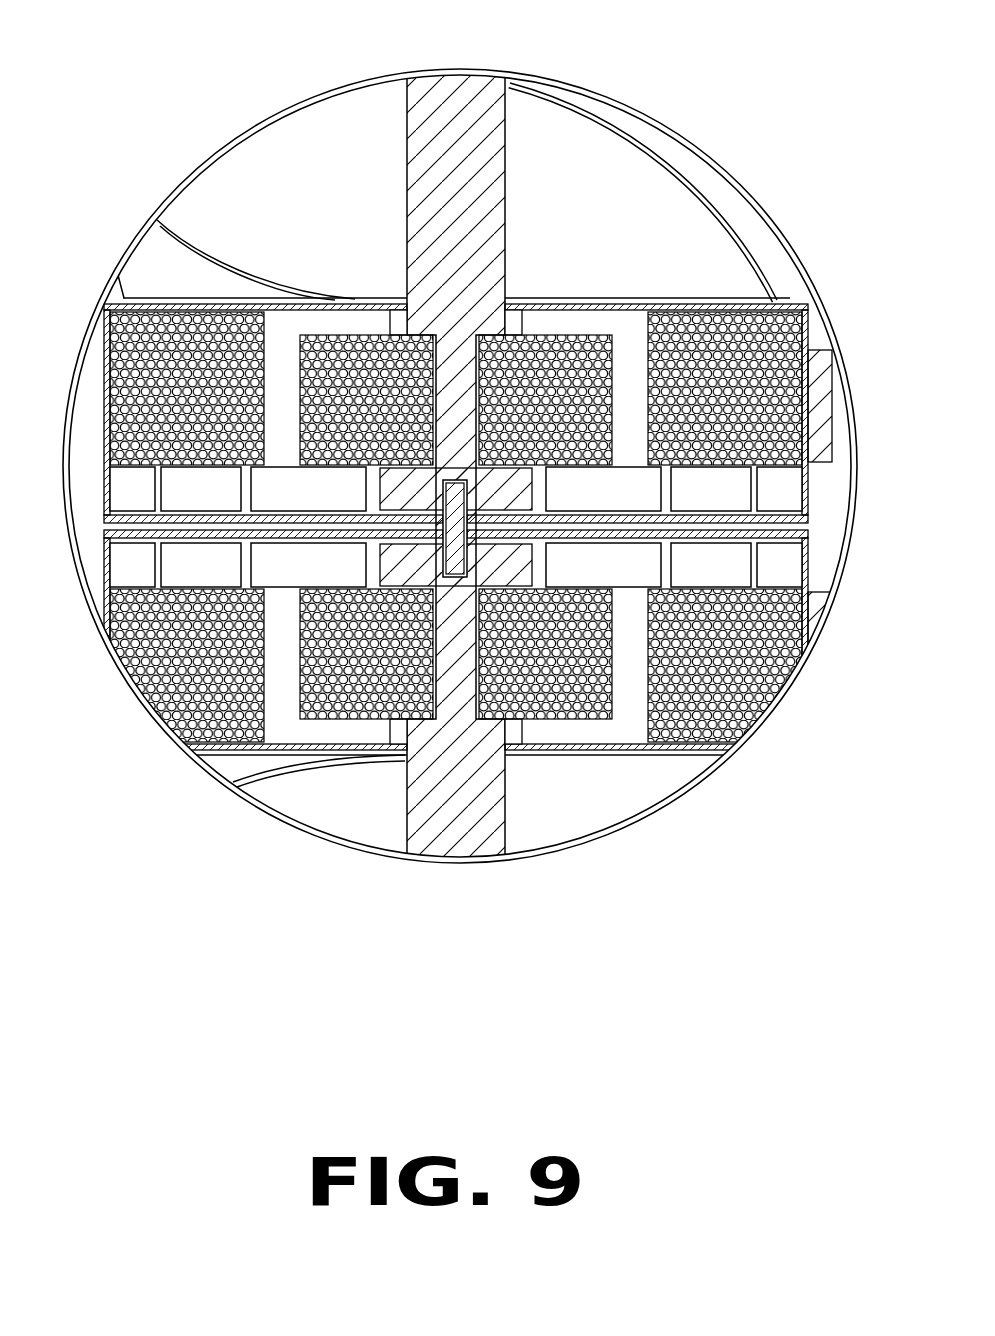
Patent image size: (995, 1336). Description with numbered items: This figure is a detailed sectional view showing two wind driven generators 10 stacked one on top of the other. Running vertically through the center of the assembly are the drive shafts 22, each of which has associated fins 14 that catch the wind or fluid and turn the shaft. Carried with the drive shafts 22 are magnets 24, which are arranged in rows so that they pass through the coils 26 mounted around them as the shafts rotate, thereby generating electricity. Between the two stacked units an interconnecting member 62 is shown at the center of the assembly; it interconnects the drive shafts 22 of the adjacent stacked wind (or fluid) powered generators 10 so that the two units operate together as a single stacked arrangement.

The wind driven generator 10 is at (750, 135).
The fins 14 is at (322, 165).
The drive shafts 22 is at (510, 130).
The magnets 24 is at (172, 668).
The coils 26 is at (778, 478).
The interconnecting member 62 is at (452, 552).